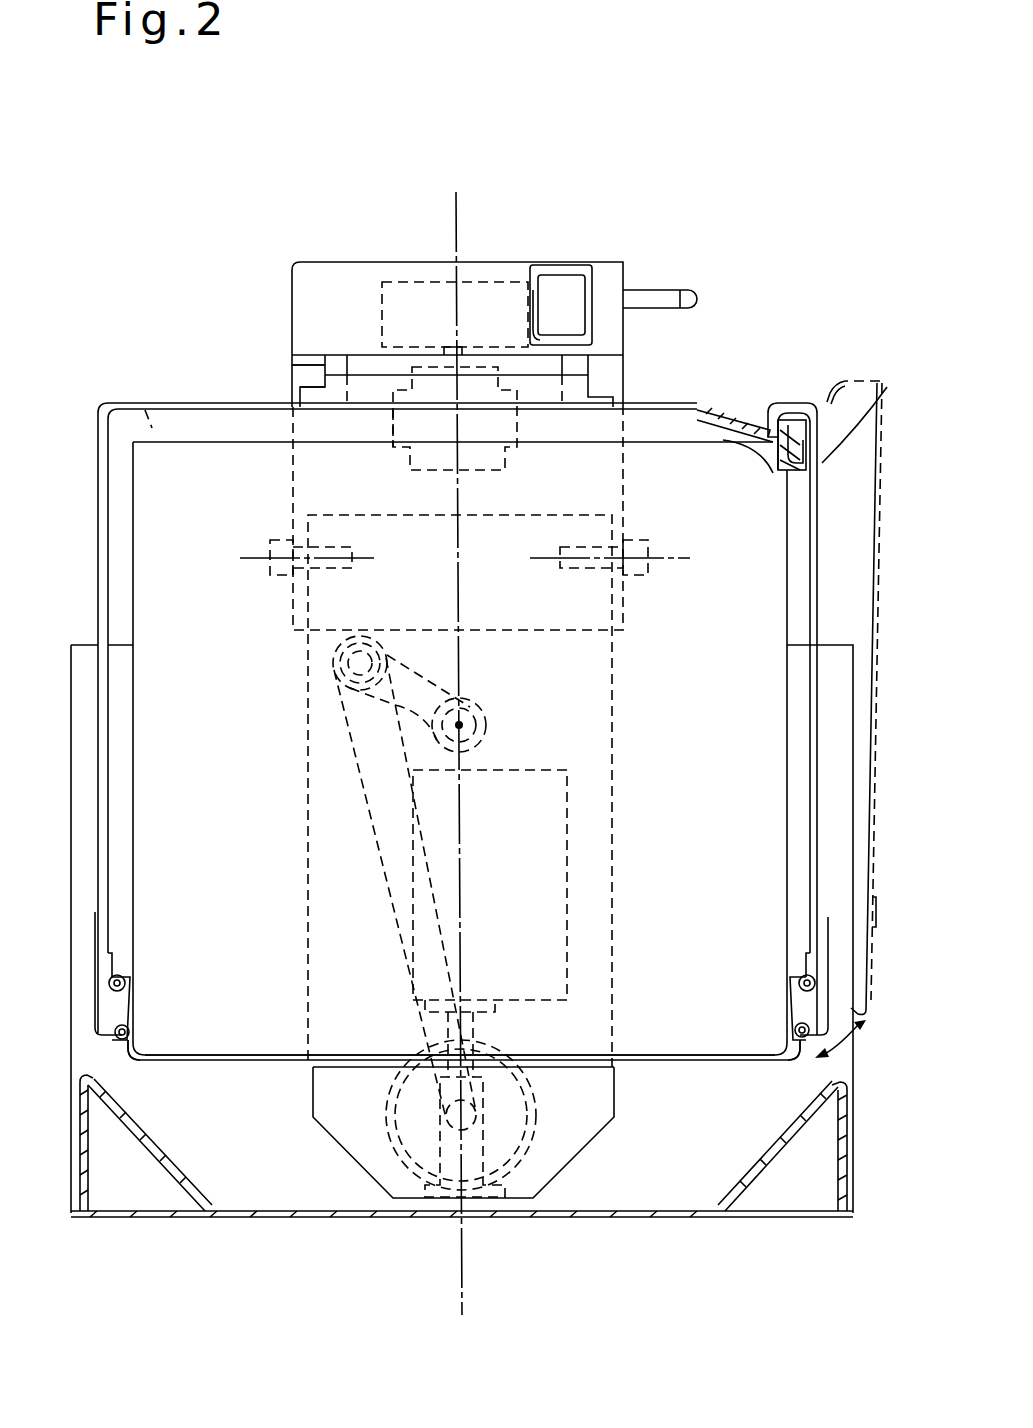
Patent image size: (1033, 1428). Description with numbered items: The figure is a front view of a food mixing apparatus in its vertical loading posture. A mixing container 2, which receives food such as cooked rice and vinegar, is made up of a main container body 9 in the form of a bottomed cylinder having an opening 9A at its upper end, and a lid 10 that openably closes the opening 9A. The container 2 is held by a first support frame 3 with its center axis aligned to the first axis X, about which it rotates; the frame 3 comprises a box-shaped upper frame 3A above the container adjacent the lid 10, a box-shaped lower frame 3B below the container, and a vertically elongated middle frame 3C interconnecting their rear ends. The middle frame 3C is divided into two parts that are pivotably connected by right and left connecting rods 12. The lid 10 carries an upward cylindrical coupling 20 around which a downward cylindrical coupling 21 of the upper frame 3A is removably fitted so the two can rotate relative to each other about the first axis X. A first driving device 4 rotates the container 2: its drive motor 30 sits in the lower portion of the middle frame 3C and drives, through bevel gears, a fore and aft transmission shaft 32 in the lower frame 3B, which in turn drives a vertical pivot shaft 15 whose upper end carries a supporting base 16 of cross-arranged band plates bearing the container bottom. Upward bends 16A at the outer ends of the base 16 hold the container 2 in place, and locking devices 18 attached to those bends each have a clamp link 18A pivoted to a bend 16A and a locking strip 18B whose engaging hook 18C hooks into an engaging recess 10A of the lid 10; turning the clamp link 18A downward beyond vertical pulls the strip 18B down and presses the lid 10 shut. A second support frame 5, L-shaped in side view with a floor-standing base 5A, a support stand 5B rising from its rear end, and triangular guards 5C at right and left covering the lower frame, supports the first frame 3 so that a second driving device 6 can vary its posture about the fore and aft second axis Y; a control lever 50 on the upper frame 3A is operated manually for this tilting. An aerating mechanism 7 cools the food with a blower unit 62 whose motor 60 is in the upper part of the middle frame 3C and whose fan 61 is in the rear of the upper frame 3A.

The mixing container 2 is at (189, 470).
The first support frame 3 is at (477, 328).
The upper frame 3A is at (316, 268).
The lower frame 3B is at (388, 1198).
The middle frame 3C is at (307, 733).
The first driving device 4 is at (546, 1114).
The second support frame 5 is at (272, 1228).
The base 5A is at (703, 1218).
The support stand 5B is at (120, 1063).
The guards 5C is at (160, 1211).
The second driving device 6 is at (366, 832).
The aerating mechanism 7 is at (374, 298).
The main container body 9 is at (775, 580).
The opening 9A is at (716, 432).
The lid 10 is at (148, 404).
The engaging recess 10A is at (698, 437).
The connecting rods 12 is at (276, 576).
The pivot shaft 15 is at (524, 1200).
The supporting base 16 is at (256, 1062).
The upward bends 16A is at (800, 1044).
The locking devices 18 is at (118, 740).
The clamp link 18A is at (800, 995).
The locking strip 18B is at (838, 390).
The engaging hook 18C is at (764, 402).
The cylindrical coupling 20 is at (296, 387).
The cylindrical coupling 21 is at (292, 365).
The drive motor 30 is at (572, 822).
The transmission shaft 32 is at (446, 1118).
The control lever 50 is at (667, 290).
The motor 60 is at (520, 466).
The fan 61 is at (506, 282).
The blower unit 62 is at (388, 452).
The first axis X is at (461, 226).
The second axis Y is at (460, 725).